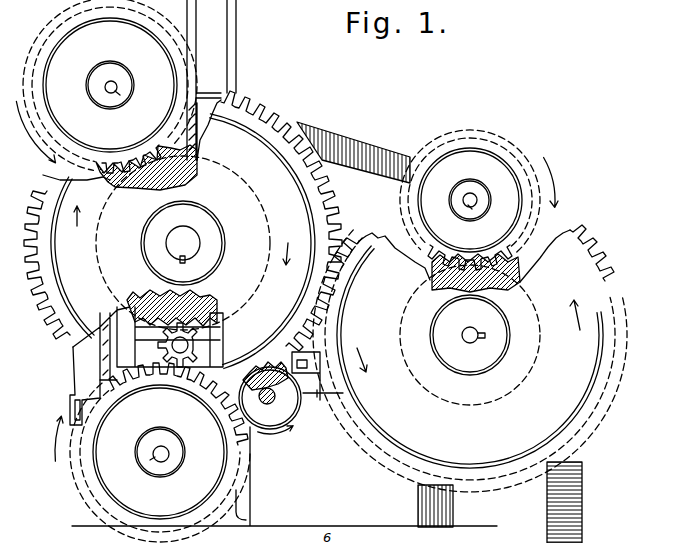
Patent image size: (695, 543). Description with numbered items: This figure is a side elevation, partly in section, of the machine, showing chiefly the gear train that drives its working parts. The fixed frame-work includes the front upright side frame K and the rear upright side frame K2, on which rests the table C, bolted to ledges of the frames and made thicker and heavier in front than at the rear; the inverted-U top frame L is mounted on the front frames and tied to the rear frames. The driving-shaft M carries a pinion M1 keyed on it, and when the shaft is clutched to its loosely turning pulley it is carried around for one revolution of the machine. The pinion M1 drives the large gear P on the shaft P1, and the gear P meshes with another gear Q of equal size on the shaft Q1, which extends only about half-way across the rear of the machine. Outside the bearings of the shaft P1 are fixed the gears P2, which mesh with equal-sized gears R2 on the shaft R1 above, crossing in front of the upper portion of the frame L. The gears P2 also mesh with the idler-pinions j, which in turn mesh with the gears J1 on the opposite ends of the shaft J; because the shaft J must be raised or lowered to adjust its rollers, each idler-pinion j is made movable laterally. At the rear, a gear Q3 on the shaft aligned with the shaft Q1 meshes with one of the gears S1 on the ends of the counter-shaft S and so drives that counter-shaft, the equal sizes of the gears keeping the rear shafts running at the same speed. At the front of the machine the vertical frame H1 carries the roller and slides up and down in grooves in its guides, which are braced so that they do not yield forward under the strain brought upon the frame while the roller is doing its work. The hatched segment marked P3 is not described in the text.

The shaft R1 is at (110, 85).
The gear R2 is at (106, 86).
The large gear P is at (183, 230).
The shaft P1 is at (183, 243).
The gear P2 is at (198, 303).
The hatched pinion segment P3 is at (146, 167).
The top frame L is at (353, 152).
The counter-shaft S is at (463, 200).
The gear S1 is at (479, 200).
The gear Q is at (470, 358).
The shaft Q1 is at (462, 337).
The gear Q3 is at (483, 273).
The vertical frame H1 is at (80, 372).
The idler-pinion j is at (177, 345).
The driving-shaft M is at (267, 383).
The pinion M1 is at (270, 400).
The table C is at (317, 386).
The shaft J is at (160, 452).
The gear J1 is at (152, 452).
The upright side frame K is at (250, 502).
The upright side frame K2 is at (418, 506).